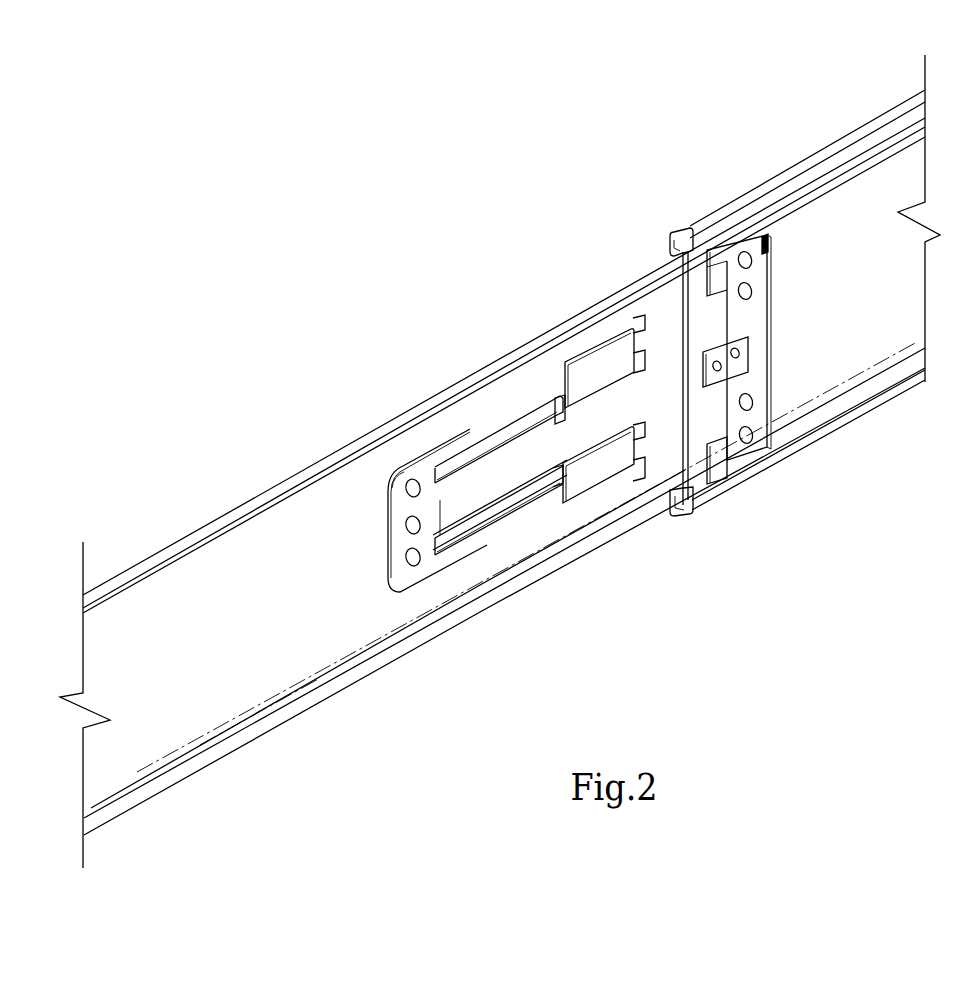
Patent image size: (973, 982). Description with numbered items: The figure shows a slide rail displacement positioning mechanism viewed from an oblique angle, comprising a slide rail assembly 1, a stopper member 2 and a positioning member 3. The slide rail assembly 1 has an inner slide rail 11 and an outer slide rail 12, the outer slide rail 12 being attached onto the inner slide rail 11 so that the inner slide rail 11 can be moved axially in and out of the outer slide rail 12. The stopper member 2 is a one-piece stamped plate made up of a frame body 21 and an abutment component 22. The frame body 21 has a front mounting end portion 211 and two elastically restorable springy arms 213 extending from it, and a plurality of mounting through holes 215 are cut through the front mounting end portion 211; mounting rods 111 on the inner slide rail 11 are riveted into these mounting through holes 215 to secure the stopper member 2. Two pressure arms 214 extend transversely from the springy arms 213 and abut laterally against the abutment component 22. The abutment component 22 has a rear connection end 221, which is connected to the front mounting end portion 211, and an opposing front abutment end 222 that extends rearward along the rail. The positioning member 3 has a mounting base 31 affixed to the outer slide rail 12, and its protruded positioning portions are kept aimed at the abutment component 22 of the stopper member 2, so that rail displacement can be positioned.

The slide rail assembly 1 is at (500, 461).
The inner slide rail 11 is at (500, 461).
The mounting rods 111 is at (358, 509).
The outer slide rail 12 is at (778, 303).
The stopper member 2 is at (533, 431).
The frame body 21 is at (393, 502).
The front mounting end portion 211 is at (360, 542).
The springy arms 213 is at (517, 467).
The pressure arms 214 is at (609, 414).
The mounting through holes 215 is at (362, 443).
The abutment component 22 is at (520, 544).
The rear connection end 221 is at (508, 564).
The front abutment end 222 is at (660, 357).
The positioning member 3 is at (760, 369).
The mounting base 31 is at (759, 374).